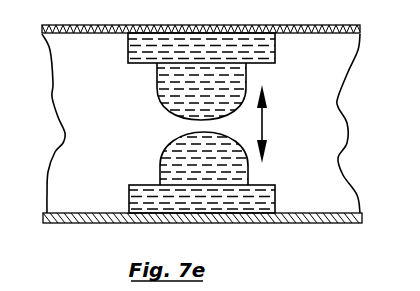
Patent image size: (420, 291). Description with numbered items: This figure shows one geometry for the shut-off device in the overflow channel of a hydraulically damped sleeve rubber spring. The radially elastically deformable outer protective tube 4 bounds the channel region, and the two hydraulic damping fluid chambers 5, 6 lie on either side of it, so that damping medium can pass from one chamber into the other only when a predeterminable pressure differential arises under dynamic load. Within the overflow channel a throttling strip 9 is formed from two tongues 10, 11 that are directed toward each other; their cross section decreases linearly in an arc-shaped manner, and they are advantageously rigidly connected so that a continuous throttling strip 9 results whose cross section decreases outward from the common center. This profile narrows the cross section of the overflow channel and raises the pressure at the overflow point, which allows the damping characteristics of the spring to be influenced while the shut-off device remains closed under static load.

The outer protective tube 4 is at (221, 20).
The chamber 5 is at (275, 57).
The chamber 6 is at (250, 198).
The throttling strip 9 is at (183, 125).
The tongue 10 is at (187, 120).
The tongue 11 is at (220, 123).